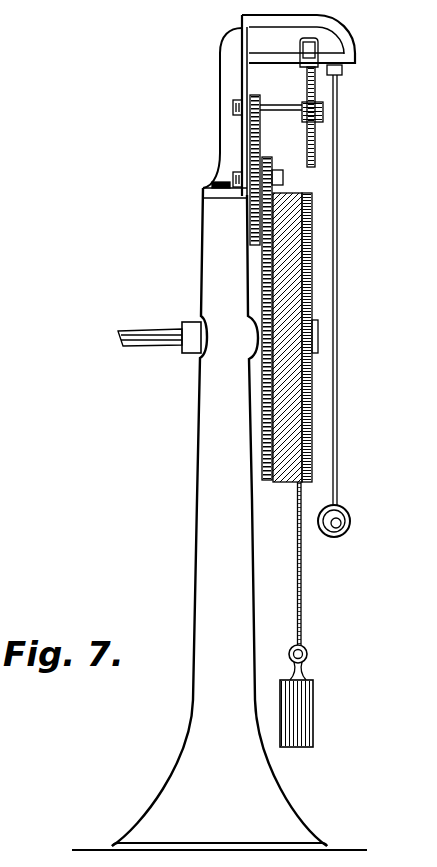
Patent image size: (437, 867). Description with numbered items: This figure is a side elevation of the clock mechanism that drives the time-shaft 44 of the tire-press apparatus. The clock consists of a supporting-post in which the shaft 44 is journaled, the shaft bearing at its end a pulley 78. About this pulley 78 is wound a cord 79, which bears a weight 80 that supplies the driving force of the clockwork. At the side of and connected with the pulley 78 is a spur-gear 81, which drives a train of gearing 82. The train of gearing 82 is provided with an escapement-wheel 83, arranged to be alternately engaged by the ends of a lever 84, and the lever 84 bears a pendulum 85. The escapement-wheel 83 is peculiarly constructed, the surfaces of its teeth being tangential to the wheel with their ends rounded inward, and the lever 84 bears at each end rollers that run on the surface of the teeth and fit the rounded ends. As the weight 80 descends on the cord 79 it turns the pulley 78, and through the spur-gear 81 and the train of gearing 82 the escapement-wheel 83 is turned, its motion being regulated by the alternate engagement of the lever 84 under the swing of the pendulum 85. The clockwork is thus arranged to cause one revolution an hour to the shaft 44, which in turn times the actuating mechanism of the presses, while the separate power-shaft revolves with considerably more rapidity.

The time-shaft 44 is at (159, 330).
The pulley 78 is at (328, 511).
The cord 79 is at (309, 581).
The weight 80 is at (315, 713).
The spur-gear 81 is at (266, 483).
The train of gearing 82 is at (277, 307).
The escapement-wheel 83 is at (291, 117).
The lever 84 is at (298, 45).
The pendulum 85 is at (351, 290).